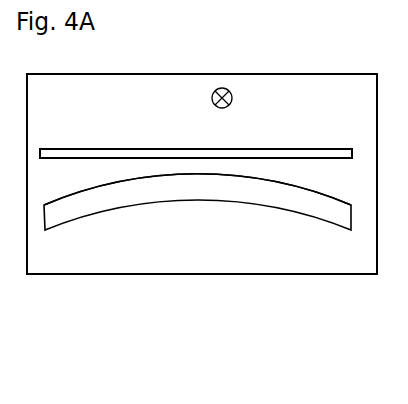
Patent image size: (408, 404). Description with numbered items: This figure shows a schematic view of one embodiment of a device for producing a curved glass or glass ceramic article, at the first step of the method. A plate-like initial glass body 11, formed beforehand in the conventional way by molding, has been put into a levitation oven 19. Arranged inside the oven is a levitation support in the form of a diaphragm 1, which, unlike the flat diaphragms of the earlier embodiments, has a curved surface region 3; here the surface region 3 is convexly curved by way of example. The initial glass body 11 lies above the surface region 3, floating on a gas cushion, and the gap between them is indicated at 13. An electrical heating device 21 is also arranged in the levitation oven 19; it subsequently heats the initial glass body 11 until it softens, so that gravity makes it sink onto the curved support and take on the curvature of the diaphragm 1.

The diaphragm 1 is at (269, 207).
The surface region 3 is at (128, 185).
The initial glass body 11 is at (326, 148).
The gap between plate and substrate 13 is at (183, 168).
The levitation oven 19 is at (118, 275).
The electrical heating device 21 is at (230, 88).